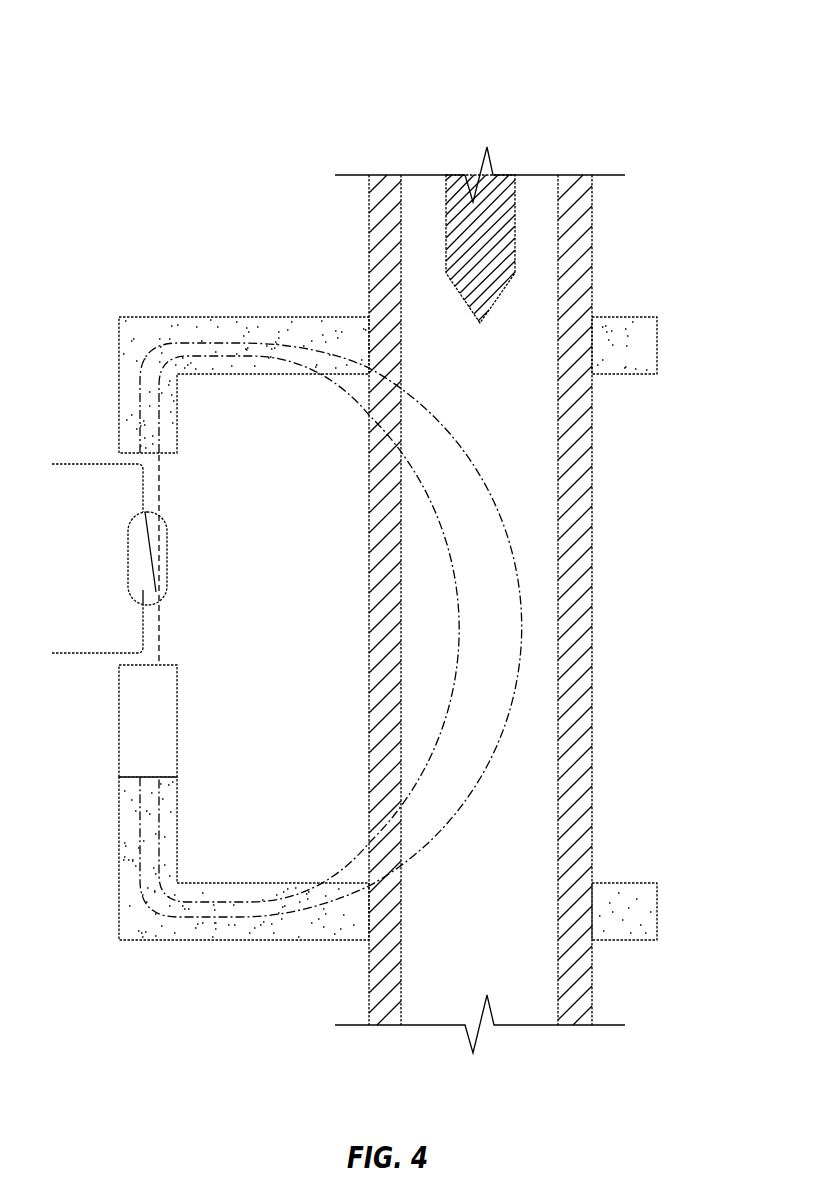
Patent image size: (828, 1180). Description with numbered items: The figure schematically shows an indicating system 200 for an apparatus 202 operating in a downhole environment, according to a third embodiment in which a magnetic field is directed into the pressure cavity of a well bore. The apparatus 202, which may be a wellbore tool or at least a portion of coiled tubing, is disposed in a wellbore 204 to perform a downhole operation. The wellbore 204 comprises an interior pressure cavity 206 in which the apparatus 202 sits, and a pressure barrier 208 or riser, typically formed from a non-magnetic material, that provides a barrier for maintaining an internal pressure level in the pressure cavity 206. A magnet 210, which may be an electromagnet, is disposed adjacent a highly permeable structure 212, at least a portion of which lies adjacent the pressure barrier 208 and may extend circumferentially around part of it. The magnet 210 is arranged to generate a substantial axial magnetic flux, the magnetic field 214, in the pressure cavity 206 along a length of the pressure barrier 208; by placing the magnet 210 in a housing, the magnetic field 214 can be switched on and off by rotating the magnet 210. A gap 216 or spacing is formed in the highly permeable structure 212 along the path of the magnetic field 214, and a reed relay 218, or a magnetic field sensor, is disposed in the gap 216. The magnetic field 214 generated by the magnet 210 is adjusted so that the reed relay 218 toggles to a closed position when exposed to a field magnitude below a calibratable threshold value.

The indicating system 200 is at (183, 72).
The apparatus 202 is at (515, 200).
The wellbore 204 is at (592, 253).
The pressure cavity 206 is at (429, 200).
The pressure barrier 208 is at (382, 269).
The magnet 210 is at (119, 722).
The highly permeable structure 212 is at (119, 340).
The magnetic field 214 is at (520, 647).
The gap 216 is at (168, 559).
The reed relay 218 is at (129, 557).